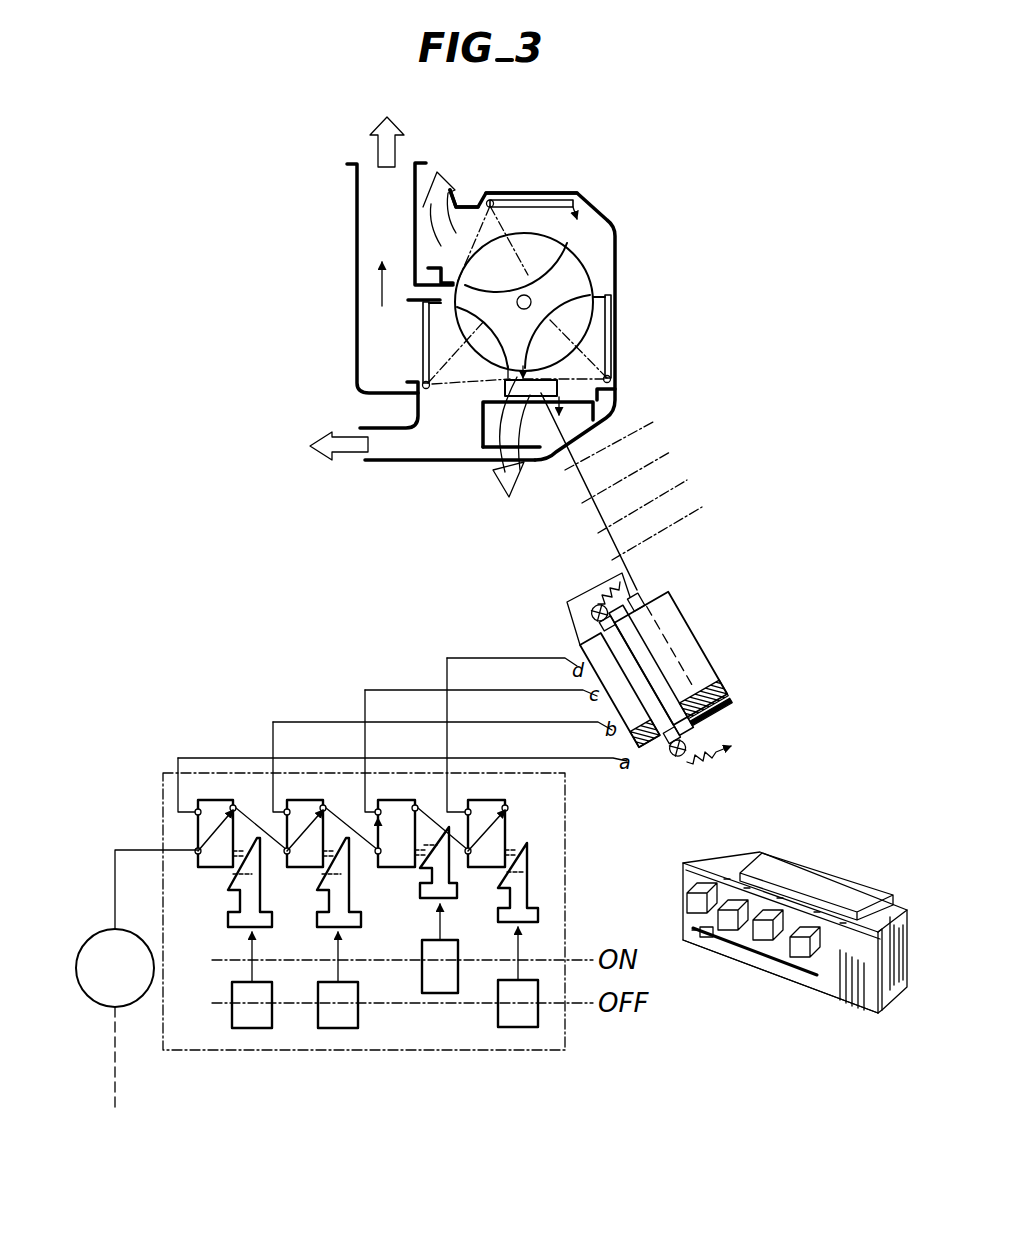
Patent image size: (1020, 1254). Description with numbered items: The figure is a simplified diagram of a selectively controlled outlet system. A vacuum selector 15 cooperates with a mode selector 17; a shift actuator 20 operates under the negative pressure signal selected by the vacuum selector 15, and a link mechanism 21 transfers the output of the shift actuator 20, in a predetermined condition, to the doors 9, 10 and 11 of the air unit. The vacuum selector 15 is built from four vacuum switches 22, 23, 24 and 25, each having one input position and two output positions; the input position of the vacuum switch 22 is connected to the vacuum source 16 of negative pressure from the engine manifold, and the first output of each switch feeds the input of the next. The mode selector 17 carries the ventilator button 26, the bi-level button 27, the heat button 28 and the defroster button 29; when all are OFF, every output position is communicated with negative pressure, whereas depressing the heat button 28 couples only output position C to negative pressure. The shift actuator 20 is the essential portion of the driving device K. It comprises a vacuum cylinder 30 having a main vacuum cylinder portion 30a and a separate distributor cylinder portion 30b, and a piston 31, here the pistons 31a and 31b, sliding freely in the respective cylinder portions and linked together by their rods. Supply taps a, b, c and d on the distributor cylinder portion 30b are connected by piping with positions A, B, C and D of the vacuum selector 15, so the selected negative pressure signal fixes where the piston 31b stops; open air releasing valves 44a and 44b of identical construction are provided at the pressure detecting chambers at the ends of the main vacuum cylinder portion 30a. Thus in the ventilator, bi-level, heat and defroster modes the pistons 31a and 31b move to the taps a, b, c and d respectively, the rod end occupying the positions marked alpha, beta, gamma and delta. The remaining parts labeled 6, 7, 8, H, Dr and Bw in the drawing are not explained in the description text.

The air inlet damper 6 is at (465, 202).
The foot outlet duct 7 is at (391, 456).
The defroster outlet duct 8 is at (372, 170).
The door 9 is at (529, 193).
The door 10 is at (614, 318).
The door 11 is at (423, 352).
The vacuum selector 15 is at (150, 795).
The vacuum source 16 is at (130, 1010).
The mode selector 17 is at (837, 985).
The shift actuator 20 is at (735, 665).
The link mechanism 21 is at (600, 265).
The vacuum switch 22 is at (222, 800).
The vacuum switch 23 is at (310, 800).
The vacuum switch 24 is at (398, 800).
The vacuum switch 25 is at (478, 800).
The ventilator button 26 is at (252, 1028).
The bi-level button 27 is at (338, 1028).
The heat button 28 is at (437, 993).
The defroster button 29 is at (519, 1027).
The vacuum cylinder 30 is at (572, 631).
The main vacuum cylinder portion 30a is at (670, 608).
The distributor cylinder portion 30b is at (612, 716).
The piston 31 is at (713, 743).
The piston 31a is at (726, 727).
The piston 31b is at (651, 760).
The open air releasing valve 44a is at (681, 757).
The open air releasing valve 44b is at (592, 603).
The heater unit H is at (630, 386).
The driving device K is at (714, 635).
The defroster damper Dr is at (570, 187).
The blower Bw is at (478, 437).